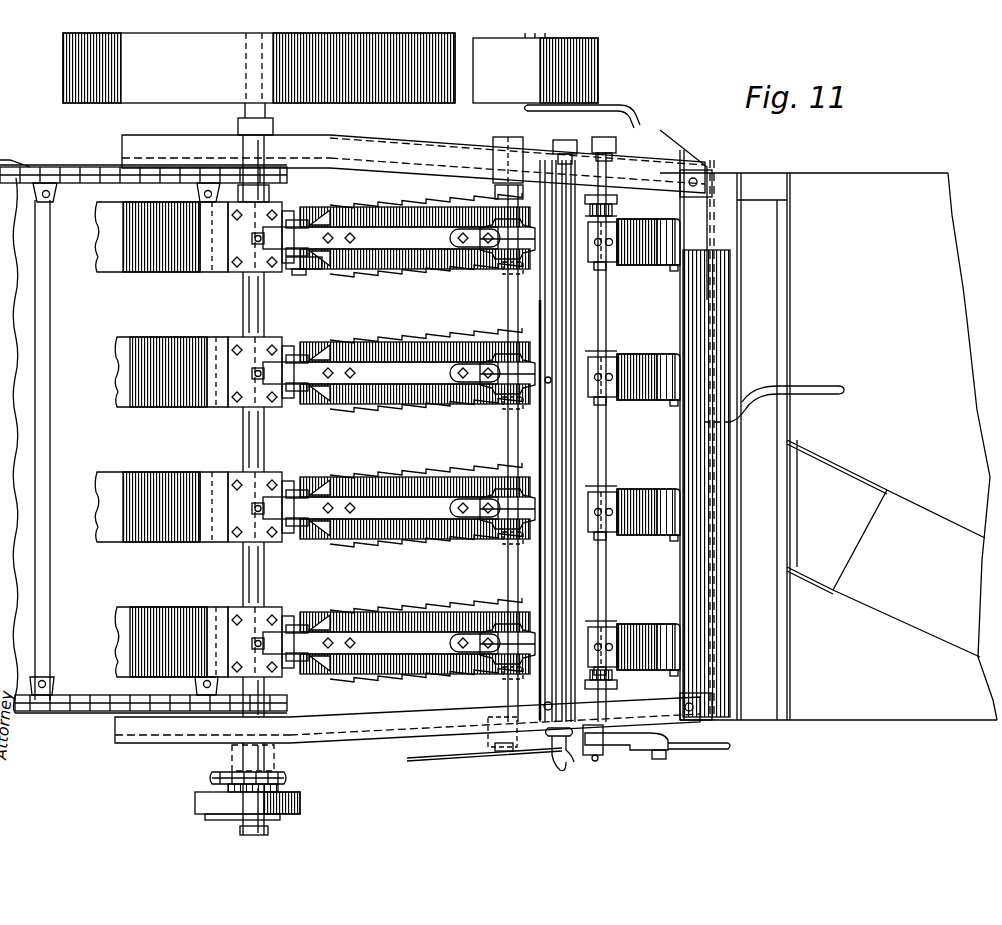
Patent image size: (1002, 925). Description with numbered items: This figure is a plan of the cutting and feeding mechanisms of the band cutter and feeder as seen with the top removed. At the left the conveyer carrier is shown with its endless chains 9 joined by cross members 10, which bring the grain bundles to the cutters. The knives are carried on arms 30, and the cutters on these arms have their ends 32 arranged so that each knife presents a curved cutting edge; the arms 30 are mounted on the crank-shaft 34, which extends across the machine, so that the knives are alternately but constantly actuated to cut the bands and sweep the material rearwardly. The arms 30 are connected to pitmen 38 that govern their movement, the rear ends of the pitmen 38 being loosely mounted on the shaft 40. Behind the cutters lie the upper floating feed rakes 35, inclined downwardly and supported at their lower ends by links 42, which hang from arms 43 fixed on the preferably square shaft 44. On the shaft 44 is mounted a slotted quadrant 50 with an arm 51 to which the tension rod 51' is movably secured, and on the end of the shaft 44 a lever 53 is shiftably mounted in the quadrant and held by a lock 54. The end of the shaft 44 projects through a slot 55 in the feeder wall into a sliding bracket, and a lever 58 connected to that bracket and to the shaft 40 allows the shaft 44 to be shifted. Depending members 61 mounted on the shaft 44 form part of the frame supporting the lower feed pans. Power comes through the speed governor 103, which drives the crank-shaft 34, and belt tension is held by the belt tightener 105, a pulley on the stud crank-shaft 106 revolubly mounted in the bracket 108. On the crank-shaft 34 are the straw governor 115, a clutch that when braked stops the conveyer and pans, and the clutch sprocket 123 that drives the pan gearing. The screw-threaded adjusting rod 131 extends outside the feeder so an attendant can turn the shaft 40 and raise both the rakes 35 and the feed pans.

The endless chains 9 is at (78, 176).
The cross members 10 is at (50, 447).
The arms 30 is at (302, 272).
The cutter ends 32 is at (98, 216).
The crank-shaft 34 is at (264, 448).
The upper floating feed rakes 35 is at (402, 274).
The pitmen 38 is at (376, 440).
The shaft 40 is at (508, 314).
The links 42 is at (643, 224).
The arms 43 is at (650, 267).
The square shaft 44 is at (606, 580).
The slotted quadrant 50 is at (651, 752).
The arm 51 is at (569, 764).
The tension rod 51' is at (484, 769).
The lever 53 is at (720, 752).
The lock 54 is at (664, 759).
The slot 55 is at (526, 140).
The lever 58 is at (532, 740).
The depending members 61 is at (618, 198).
The speed governor 103 is at (185, 82).
The belt tightener 105 is at (535, 68).
The stud crank-shaft 106 is at (614, 107).
The bracket 108 is at (660, 130).
The straw governor 115 is at (300, 804).
The clutch sprocket 123 is at (291, 780).
The screw-threaded adjusting rod 131 is at (828, 386).